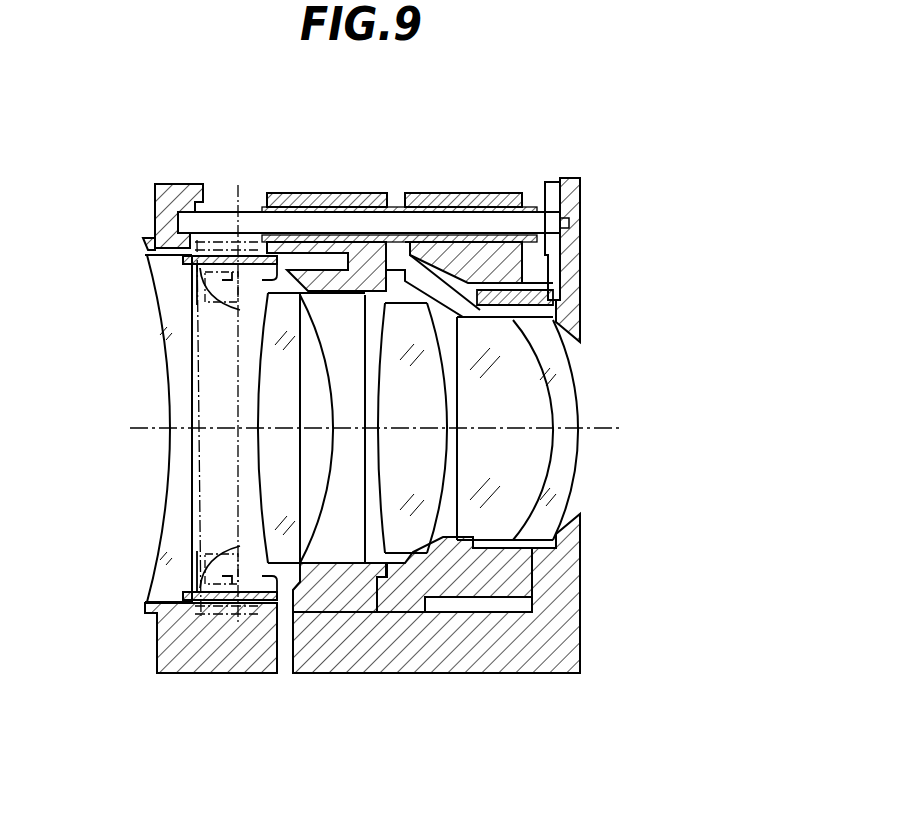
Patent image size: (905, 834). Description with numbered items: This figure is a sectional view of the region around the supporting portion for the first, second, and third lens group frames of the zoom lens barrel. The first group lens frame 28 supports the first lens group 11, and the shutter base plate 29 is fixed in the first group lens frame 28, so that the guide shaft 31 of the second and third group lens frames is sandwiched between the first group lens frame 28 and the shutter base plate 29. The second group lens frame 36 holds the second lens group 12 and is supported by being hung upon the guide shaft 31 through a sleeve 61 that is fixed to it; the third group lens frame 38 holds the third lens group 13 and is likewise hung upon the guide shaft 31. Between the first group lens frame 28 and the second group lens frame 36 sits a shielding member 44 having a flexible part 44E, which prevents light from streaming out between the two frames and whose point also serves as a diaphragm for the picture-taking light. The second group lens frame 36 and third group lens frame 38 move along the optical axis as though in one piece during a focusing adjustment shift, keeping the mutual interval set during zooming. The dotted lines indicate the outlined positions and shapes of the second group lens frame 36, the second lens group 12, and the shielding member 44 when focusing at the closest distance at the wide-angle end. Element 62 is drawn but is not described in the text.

The first lens group 11 is at (176, 380).
The second lens group 12 is at (395, 450).
The third lens group 13 is at (527, 452).
The first group lens frame 28 is at (180, 183).
The shutter base plate 29 is at (568, 180).
The guide shaft 31 is at (543, 190).
The second group lens frame 36 is at (362, 193).
The third group lens frame 38 is at (495, 193).
The shielding member 44 is at (190, 278).
The flexible part 44E is at (248, 192).
The sleeve 61 is at (263, 212).
The guide member 62 is at (410, 193).